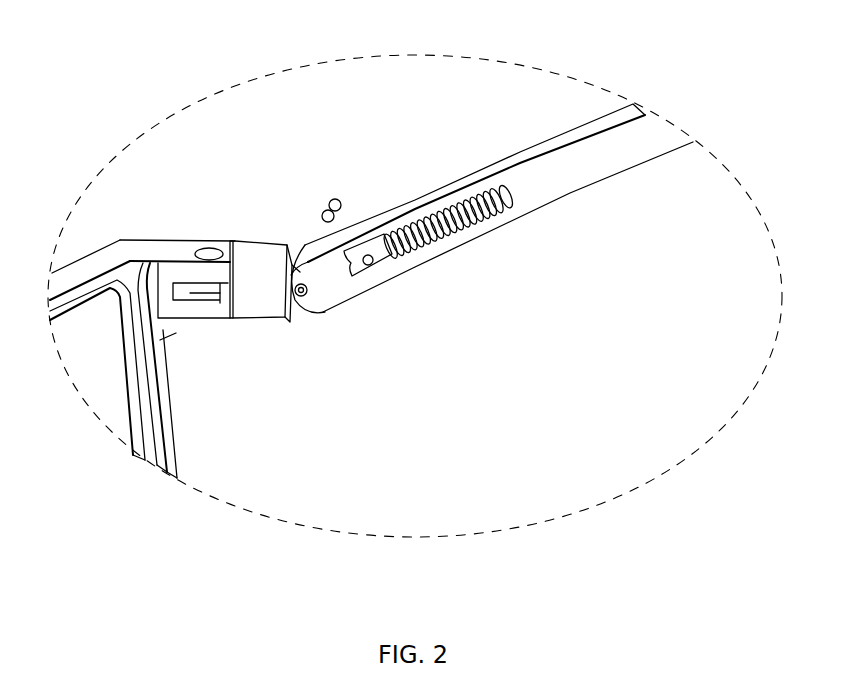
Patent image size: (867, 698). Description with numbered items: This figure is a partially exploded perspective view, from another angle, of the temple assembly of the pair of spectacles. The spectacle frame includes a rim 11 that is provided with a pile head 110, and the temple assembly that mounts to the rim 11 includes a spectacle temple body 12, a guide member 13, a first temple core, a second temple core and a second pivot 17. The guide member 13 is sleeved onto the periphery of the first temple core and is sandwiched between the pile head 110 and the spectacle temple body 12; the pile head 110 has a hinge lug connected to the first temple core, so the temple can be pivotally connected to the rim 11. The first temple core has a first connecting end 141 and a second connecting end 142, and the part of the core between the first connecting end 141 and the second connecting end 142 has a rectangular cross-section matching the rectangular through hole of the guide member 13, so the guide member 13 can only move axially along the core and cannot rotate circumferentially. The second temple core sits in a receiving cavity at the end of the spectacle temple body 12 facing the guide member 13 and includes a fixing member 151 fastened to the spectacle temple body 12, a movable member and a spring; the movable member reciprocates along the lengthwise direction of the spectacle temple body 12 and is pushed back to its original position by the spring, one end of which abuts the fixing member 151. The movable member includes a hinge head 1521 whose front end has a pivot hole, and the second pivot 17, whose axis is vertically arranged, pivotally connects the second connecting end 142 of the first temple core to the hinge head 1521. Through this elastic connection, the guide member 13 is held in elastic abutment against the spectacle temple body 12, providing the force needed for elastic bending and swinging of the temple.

The rim 11 is at (93, 262).
The pile head 110 is at (180, 247).
The spectacle temple body 12 is at (498, 162).
The guide member 13 is at (257, 255).
The second pivot 17 is at (327, 200).
The first connecting end 141 is at (208, 292).
The second connecting end 142 is at (288, 267).
The fixing member 151 is at (368, 265).
The hinge head 1521 is at (307, 282).